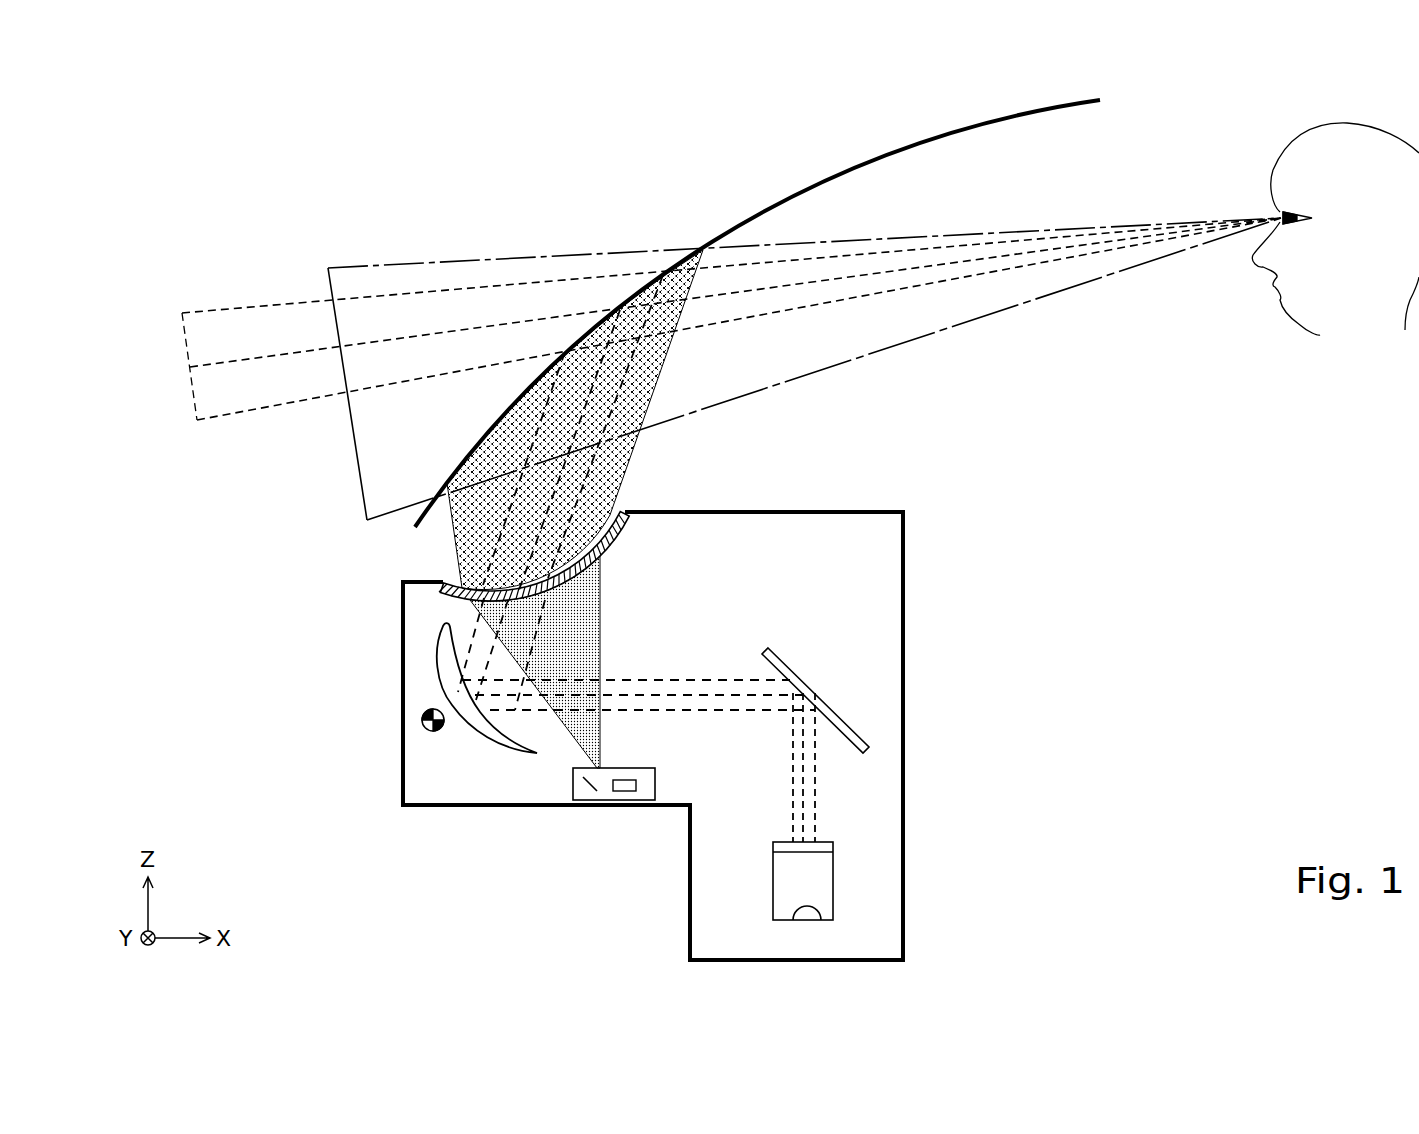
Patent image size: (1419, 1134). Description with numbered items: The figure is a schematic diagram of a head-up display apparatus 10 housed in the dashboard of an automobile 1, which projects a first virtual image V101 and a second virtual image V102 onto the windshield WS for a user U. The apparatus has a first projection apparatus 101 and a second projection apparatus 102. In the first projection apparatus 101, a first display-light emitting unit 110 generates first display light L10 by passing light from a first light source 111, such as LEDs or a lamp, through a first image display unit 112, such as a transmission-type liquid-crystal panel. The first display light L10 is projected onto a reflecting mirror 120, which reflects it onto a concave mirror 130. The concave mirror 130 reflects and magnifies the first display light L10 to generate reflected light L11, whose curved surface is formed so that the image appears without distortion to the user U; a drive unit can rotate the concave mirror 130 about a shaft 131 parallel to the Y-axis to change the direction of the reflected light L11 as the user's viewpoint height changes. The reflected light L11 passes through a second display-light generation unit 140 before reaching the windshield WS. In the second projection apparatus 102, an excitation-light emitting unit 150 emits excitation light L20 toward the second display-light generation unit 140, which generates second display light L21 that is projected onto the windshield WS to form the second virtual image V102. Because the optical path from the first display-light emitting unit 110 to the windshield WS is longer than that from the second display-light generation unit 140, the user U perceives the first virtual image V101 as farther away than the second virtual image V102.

The automobile 1 is at (680, 169).
The head-up display apparatus 10 is at (905, 588).
The windshield WS is at (795, 195).
The user U is at (1300, 133).
The first virtual image V101 is at (188, 406).
The second virtual image V102 is at (360, 497).
The first display light L10 is at (818, 794).
The reflected light L11 is at (473, 562).
The excitation light L20 is at (600, 617).
The second display light L21 is at (617, 470).
The first projection apparatus 101 is at (413, 686).
The second projection apparatus 102 is at (660, 740).
The first display-light emitting unit 110 is at (801, 876).
The first light source 111 is at (795, 908).
The first image display unit 112 is at (773, 845).
The reflecting mirror 120 is at (816, 694).
The concave mirror 130 is at (521, 771).
The shaft 131 is at (422, 726).
The second display-light generation unit 140 is at (442, 587).
The excitation-light emitting unit 150 is at (647, 800).